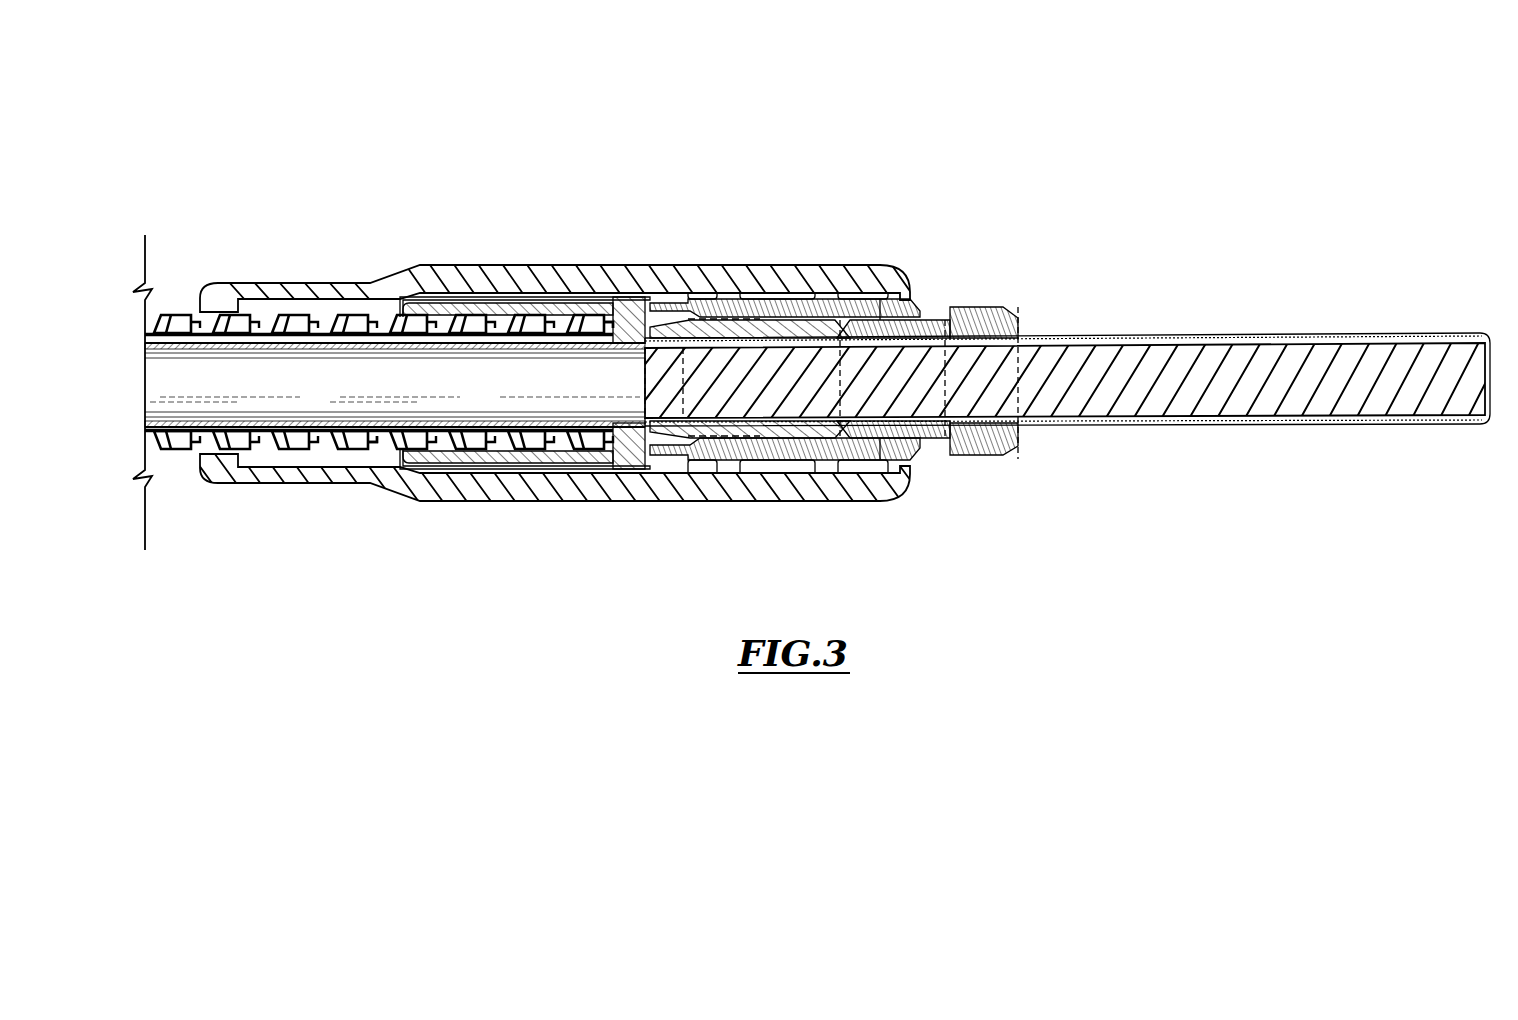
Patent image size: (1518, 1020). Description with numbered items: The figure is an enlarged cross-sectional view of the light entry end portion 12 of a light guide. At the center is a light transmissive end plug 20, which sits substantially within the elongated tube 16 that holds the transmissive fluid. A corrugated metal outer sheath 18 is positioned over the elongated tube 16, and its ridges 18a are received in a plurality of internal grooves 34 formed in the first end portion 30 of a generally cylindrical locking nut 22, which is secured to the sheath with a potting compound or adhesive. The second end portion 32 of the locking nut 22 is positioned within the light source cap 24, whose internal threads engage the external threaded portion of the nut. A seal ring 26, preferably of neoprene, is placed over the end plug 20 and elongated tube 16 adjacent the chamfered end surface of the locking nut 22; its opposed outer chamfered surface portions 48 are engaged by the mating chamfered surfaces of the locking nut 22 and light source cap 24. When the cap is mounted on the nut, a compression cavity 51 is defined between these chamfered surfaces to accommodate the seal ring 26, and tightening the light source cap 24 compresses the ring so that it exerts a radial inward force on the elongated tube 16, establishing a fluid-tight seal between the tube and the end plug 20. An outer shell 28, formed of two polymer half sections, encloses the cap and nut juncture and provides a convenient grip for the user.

The light entry end portion 12 is at (649, 115).
The elongated tube 16 is at (283, 428).
The metal outer sheath 18 is at (178, 318).
The ridge 18a is at (578, 313).
The light transmissive end plug 20 is at (1250, 348).
The locking nut 22 is at (627, 456).
The light source cap 24 is at (1002, 308).
The seal ring 26 is at (880, 478).
The outer shell 28 is at (535, 270).
The first end portion 30 is at (520, 461).
The second end portion 32 is at (771, 331).
The internal groove 34 is at (446, 471).
The chamfered surface portion 48 is at (896, 328).
The compression cavity 51 is at (896, 303).